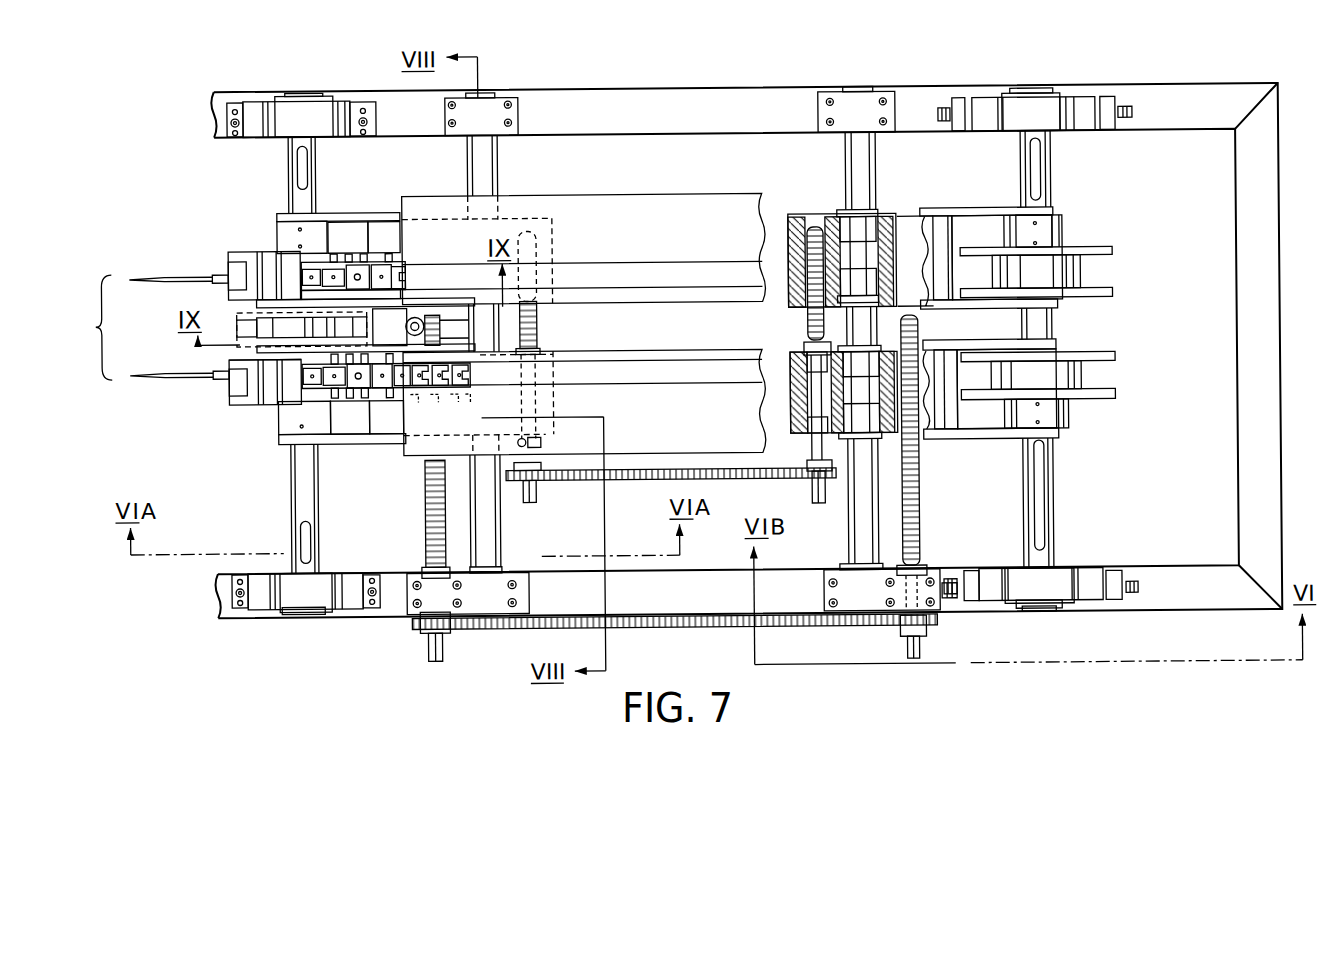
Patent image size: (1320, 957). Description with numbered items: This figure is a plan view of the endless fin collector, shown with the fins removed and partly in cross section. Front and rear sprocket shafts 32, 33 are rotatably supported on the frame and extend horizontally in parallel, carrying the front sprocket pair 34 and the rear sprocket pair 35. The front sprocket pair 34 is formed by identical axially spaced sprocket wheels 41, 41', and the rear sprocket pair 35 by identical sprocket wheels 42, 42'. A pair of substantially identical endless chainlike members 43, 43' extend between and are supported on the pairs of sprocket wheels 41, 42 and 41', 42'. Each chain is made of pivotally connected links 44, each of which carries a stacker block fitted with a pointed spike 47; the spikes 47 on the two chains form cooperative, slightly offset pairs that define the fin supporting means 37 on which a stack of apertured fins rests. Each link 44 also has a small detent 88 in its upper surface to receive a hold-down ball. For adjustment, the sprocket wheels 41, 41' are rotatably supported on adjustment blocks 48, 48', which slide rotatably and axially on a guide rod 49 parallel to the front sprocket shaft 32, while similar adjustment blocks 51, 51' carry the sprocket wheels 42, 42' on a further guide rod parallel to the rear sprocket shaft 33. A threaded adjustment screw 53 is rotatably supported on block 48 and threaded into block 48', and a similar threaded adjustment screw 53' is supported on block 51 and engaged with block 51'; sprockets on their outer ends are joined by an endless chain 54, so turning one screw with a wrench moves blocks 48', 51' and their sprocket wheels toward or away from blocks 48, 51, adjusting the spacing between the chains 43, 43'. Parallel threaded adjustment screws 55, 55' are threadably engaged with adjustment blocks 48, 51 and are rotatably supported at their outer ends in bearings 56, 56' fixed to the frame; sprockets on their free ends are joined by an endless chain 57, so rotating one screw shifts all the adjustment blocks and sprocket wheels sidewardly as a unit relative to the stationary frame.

The front sprocket shaft 32 is at (291, 154).
The rear sprocket shaft 33 is at (1050, 150).
The front sprocket pair 34 is at (211, 400).
The rear sprocket pair 35 is at (1103, 283).
The fin supporting means 37 is at (270, 326).
The sprocket wheel 41 is at (264, 405).
The sprocket wheel 41' is at (249, 253).
The sprocket wheel 42 is at (1040, 394).
The sprocket wheel 42' is at (1043, 255).
The endless chainlike member 43 is at (386, 444).
The endless chainlike member 43' is at (390, 199).
The link 44 is at (228, 273).
The spike 47 is at (339, 267).
The adjustment block 48 is at (350, 446).
The adjustment block 48' is at (347, 199).
The guide rod 49 is at (487, 517).
The adjustment block 51 is at (885, 419).
The adjustment block 51' is at (869, 236).
The threaded adjustment screw 53 is at (570, 339).
The threaded adjustment screw 53' is at (779, 365).
The endless chain 54 is at (648, 477).
The threaded adjustment screw 55 is at (415, 519).
The threaded adjustment screw 55' is at (940, 463).
The bearing 56 is at (453, 646).
The bearing 56' is at (954, 636).
The endless chain 57 is at (625, 627).
The detent 88 is at (353, 275).